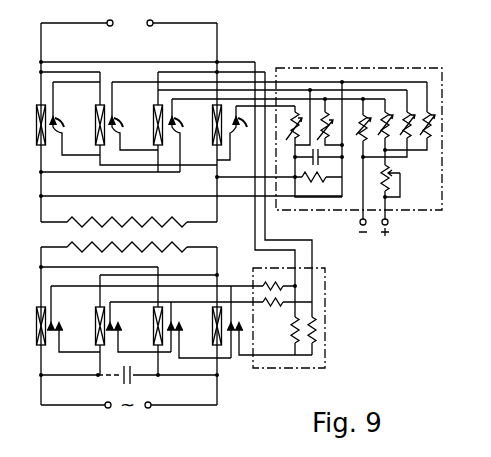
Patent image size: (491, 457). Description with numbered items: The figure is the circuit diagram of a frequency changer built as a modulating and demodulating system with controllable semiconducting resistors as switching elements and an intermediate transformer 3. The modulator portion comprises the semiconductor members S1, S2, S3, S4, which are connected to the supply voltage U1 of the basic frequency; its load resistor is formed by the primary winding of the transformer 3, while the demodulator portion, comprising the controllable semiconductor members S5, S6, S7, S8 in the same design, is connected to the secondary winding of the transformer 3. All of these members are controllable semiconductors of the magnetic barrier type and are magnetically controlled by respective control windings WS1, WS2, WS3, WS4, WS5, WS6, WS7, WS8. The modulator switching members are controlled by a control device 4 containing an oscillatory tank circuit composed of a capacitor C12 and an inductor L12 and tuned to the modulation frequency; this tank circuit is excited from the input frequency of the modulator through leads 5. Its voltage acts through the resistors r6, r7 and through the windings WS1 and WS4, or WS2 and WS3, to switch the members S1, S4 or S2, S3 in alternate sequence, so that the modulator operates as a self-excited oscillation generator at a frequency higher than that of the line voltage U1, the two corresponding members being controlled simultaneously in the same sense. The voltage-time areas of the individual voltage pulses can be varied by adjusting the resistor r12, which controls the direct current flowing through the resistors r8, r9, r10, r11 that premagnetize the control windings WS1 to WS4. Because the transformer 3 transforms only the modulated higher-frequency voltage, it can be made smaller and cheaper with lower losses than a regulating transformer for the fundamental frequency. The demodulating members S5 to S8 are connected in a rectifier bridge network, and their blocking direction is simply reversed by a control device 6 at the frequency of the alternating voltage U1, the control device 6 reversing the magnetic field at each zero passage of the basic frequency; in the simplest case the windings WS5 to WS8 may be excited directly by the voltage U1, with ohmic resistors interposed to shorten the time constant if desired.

The intermediate transformer 3 is at (188, 235).
The control device 4 is at (322, 68).
The leads 5 is at (230, 177).
The control device 6 is at (293, 368).
The supply voltage U1 is at (129, 25).
The semiconductor member S1 is at (37, 114).
The semiconductor member S2 is at (96, 114).
The semiconductor member S3 is at (154, 114).
The semiconductor member S4 is at (213, 114).
The demodulating member S5 is at (37, 318).
The demodulating member S6 is at (96, 318).
The demodulating member S7 is at (154, 318).
The demodulating member S8 is at (213, 318).
The control winding WS1 is at (74, 118).
The control winding WS2 is at (133, 117).
The control winding WS3 is at (187, 135).
The control winding WS4 is at (238, 133).
The control winding WS5 is at (73, 319).
The control winding WS6 is at (138, 327).
The control winding WS7 is at (199, 330).
The control winding WS8 is at (269, 337).
The resistor r6 is at (335, 135).
The resistor r7 is at (290, 135).
The resistor r8 is at (410, 127).
The resistor r9 is at (389, 131).
The resistor r10 is at (380, 135).
The resistor r11 is at (357, 165).
The resistor r12 is at (399, 170).
The capacitor C12 is at (319, 160).
The inductor L12 is at (308, 178).